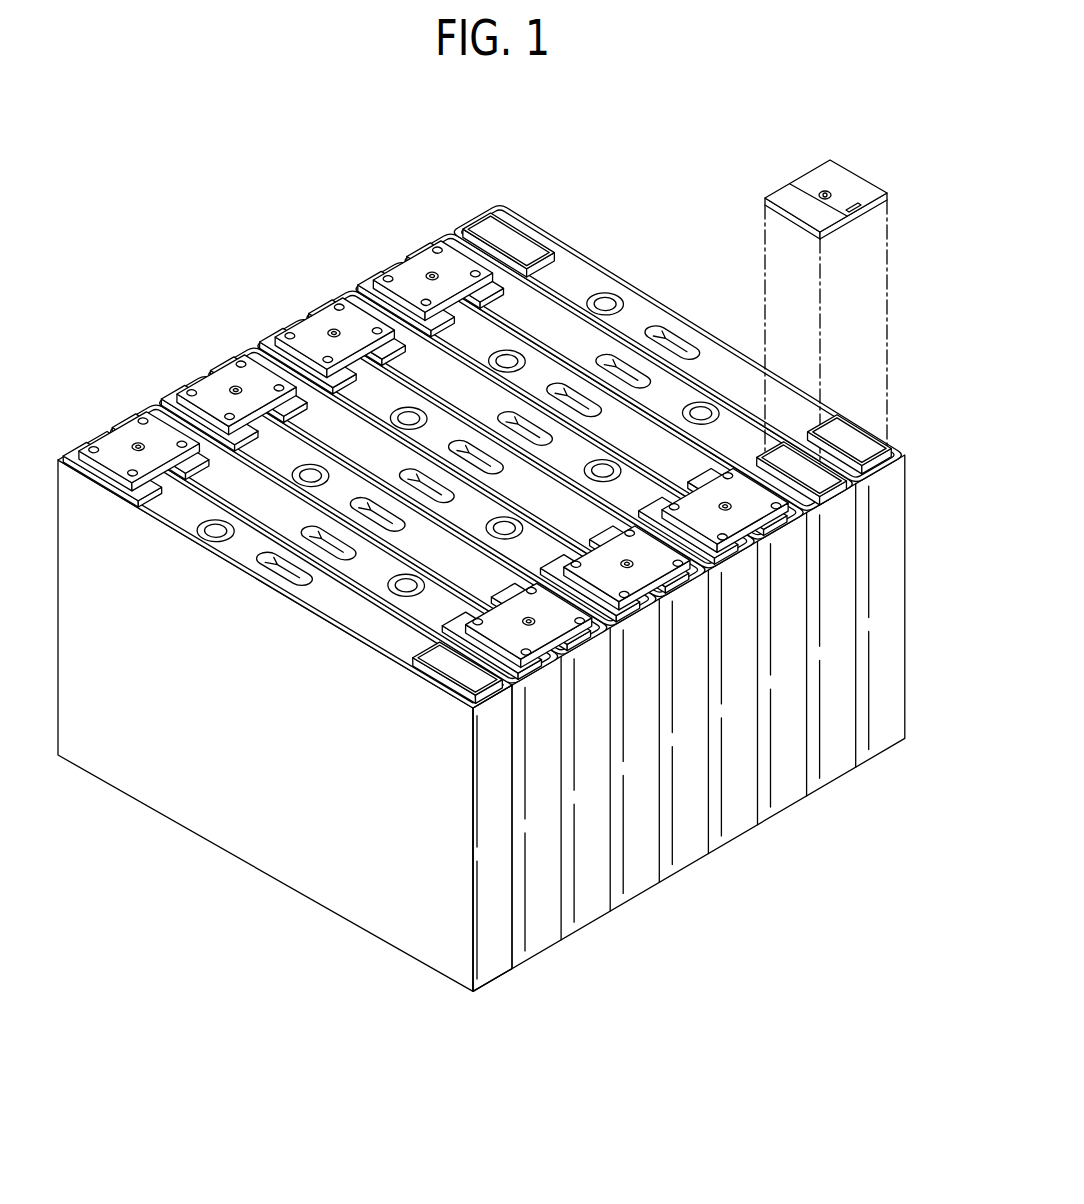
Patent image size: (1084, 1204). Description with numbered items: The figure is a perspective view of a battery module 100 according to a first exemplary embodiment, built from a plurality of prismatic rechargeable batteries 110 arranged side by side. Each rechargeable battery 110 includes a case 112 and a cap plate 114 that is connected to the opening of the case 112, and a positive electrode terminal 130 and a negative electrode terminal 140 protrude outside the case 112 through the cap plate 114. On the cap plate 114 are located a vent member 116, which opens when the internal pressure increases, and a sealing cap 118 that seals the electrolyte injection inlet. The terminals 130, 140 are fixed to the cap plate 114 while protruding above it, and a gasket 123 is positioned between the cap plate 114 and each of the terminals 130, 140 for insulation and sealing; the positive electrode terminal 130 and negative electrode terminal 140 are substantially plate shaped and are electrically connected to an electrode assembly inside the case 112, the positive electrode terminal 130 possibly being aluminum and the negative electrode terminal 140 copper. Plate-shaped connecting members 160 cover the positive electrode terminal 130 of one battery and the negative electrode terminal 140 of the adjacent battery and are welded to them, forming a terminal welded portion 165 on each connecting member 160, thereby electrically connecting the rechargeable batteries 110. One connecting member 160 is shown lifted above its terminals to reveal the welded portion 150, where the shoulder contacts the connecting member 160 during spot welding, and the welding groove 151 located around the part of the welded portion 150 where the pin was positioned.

The battery module 100 is at (490, 573).
The rechargeable battery 110 is at (314, 735).
The case 112 is at (402, 935).
The cap plate 114 is at (349, 608).
The vent member 116 is at (280, 574).
The sealing cap 118 is at (200, 533).
The gasket 123 is at (897, 451).
The positive electrode terminal 130 is at (512, 238).
The negative electrode terminal 140 is at (459, 665).
The welded portion 150 is at (835, 190).
The welding groove 151 is at (826, 190).
The connecting member 160 is at (489, 306).
The terminal welded portion 165 is at (144, 419).